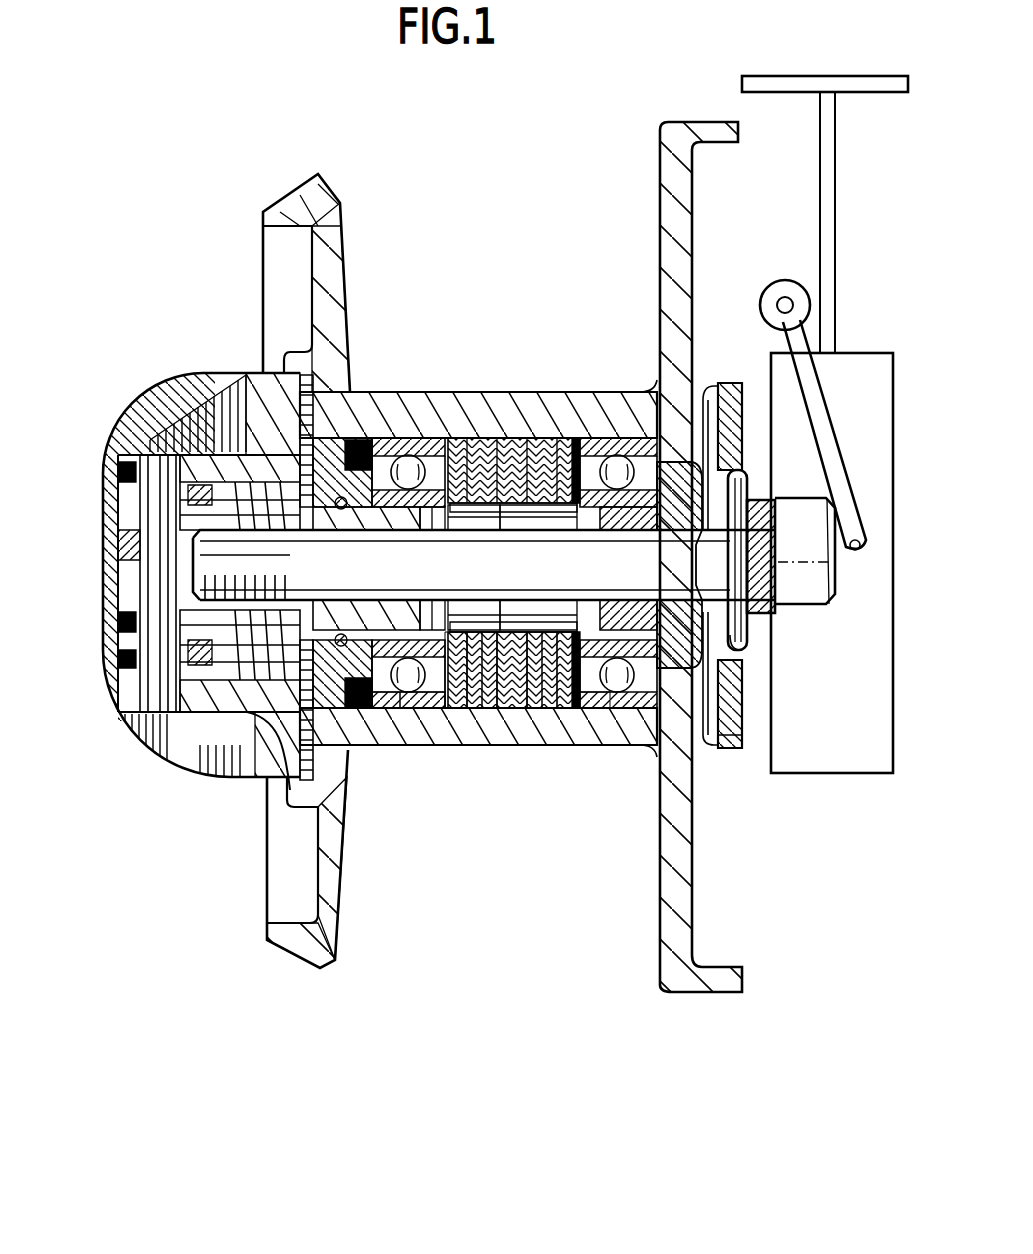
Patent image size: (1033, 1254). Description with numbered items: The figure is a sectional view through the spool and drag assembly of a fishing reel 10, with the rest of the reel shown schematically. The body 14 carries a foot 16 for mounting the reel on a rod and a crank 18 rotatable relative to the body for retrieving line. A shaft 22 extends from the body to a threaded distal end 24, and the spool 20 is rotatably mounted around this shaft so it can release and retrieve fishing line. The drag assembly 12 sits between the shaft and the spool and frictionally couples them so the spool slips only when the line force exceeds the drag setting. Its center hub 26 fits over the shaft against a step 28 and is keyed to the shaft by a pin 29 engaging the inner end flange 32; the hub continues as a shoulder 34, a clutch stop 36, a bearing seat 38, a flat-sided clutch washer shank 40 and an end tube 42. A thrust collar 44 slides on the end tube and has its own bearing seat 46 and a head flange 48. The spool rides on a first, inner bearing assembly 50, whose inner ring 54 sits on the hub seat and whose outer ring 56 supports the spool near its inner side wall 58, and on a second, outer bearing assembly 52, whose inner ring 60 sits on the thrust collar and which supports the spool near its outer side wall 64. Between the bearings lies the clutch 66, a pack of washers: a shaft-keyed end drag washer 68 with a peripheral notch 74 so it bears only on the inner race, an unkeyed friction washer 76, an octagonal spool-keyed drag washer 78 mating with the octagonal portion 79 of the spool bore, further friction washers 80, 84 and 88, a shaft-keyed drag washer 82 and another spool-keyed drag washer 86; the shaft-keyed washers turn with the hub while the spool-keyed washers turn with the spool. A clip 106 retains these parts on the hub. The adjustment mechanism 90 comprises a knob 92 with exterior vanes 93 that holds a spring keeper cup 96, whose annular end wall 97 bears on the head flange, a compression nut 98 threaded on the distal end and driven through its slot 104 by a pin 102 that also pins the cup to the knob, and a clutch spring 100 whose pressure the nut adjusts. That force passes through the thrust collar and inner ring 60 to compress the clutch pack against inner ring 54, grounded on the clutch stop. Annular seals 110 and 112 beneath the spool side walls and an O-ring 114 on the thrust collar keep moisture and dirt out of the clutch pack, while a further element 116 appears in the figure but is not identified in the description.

The fishing reel 10 is at (165, 352).
The drag assembly 12 is at (120, 729).
The body 14 is at (850, 770).
The foot 16 is at (822, 76).
The crank 18 is at (823, 392).
The spool 20 is at (296, 176).
The shaft 22 is at (745, 460).
The threaded distal end 24 is at (118, 578).
The center hub 26 is at (733, 745).
The step 28 is at (748, 485).
The pin 29 is at (742, 625).
The inner end flange 32 is at (735, 390).
The shoulder 34 is at (705, 395).
The clutch stop 36 is at (680, 470).
The bearing seat 38 is at (583, 440).
The clutch washer shank 40 is at (487, 445).
The end tube 42 is at (437, 440).
The thrust collar 44 is at (355, 750).
The bearing seat 46 is at (418, 745).
The head flange 48 is at (398, 730).
The first, inner bearing assembly 50 is at (650, 720).
The second, outer bearing assembly 52 is at (412, 430).
The inner ring 54 is at (638, 740).
The outer ring 56 is at (612, 720).
The inner side wall 58 is at (660, 196).
The inner ring 60 is at (440, 415).
The outer side wall 64 is at (330, 205).
The clutch 66 is at (505, 435).
The shaft-keyed end drag washer 68 is at (575, 720).
The peripheral notch 74 is at (595, 740).
The friction washer 76 is at (445, 735).
The octagonal spool-keyed drag washer 78 is at (535, 720).
The octagonally shaped portion 79 is at (520, 500).
The friction washer 80 is at (520, 740).
The shaft-keyed drag washer 82 is at (492, 720).
The friction washer 84 is at (470, 740).
The octagonal spool-keyed drag washer 86 is at (505, 625).
The friction washer 88 is at (476, 625).
The adjustment mechanism 90 is at (98, 533).
The knob 92 is at (135, 440).
The vanes 93 is at (195, 772).
The spring keeper cup 96 is at (198, 452).
The annular end wall 97 is at (270, 470).
The compression nut 98 is at (185, 755).
The clutch spring 100 is at (238, 772).
The pin 102 is at (122, 628).
The slot 104 is at (122, 480).
The clip 106 is at (300, 605).
The annular seal 110 is at (645, 392).
The annular seal 112 is at (352, 445).
The O-ring 114 is at (345, 635).
The flange 116 is at (268, 800).